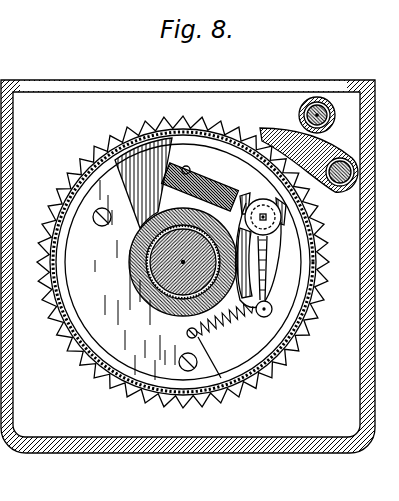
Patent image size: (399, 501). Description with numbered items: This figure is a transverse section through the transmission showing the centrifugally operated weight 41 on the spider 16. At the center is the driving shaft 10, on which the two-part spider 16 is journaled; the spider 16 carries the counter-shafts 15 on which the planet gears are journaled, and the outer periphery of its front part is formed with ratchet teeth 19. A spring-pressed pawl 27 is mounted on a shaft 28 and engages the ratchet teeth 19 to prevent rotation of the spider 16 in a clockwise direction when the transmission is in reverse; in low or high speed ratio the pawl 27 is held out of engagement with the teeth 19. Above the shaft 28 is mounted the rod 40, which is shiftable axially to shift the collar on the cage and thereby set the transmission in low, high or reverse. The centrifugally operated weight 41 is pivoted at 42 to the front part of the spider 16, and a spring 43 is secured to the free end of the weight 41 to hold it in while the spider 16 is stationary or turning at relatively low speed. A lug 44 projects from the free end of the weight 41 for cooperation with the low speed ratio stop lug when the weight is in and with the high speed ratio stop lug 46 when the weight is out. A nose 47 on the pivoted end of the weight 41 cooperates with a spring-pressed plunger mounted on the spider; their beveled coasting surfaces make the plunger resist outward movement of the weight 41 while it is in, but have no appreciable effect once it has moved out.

The driving shaft 10 is at (122, 263).
The counter-shafts 15 is at (143, 310).
The spider 16 is at (100, 197).
The ratchet teeth 19 is at (133, 131).
The spring-pressed pawl 27 is at (274, 129).
The shaft 28 is at (340, 187).
The rod 40 is at (318, 99).
The centrifugally operated weight 41 is at (274, 259).
The pivot 42 is at (268, 219).
The spring 43 is at (226, 324).
The lug 44 is at (272, 309).
The high speed ratio stop lug 46 is at (213, 182).
The nose 47 is at (246, 190).